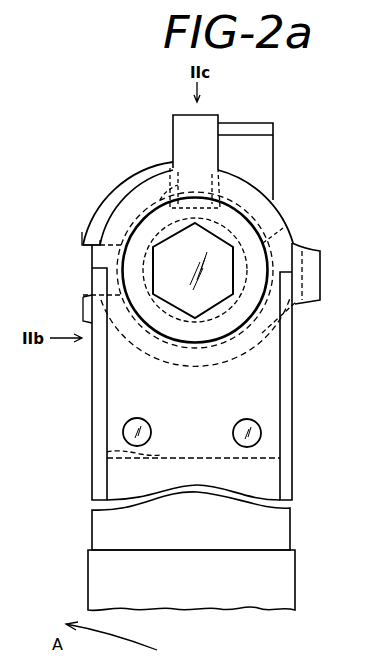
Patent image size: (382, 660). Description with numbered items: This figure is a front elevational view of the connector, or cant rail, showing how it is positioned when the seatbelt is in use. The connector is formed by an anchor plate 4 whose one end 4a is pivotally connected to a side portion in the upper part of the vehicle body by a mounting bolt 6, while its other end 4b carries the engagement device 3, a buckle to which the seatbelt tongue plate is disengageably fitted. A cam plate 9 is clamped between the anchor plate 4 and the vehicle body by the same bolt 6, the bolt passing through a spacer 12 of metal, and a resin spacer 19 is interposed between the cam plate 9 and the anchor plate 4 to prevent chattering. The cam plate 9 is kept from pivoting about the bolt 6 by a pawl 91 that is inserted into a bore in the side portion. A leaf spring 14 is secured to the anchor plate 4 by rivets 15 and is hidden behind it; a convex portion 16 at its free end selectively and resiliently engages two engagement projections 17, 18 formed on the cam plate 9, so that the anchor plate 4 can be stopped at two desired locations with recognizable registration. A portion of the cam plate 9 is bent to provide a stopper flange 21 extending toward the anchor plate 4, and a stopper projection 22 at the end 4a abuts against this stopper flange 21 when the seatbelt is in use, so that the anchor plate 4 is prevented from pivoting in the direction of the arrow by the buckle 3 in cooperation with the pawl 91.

The engagement device 3 is at (286, 588).
The anchor plate 4 is at (282, 470).
The one end of the anchor plate 4a is at (278, 216).
The other end of the anchor plate 4b is at (283, 528).
The mounting bolt 6 is at (203, 300).
The cam plate 9 is at (250, 350).
The spacer 12 is at (98, 326).
The leaf spring 14 is at (104, 458).
The rivets 15 is at (140, 416).
The convex portion 16 is at (219, 186).
The engagement projection 17 is at (166, 163).
The engagement projection 18 is at (90, 247).
The resin spacer 19 is at (284, 228).
The stopper flange 21 is at (260, 136).
The stopper projection 22 is at (183, 127).
The pawl 91 is at (314, 270).